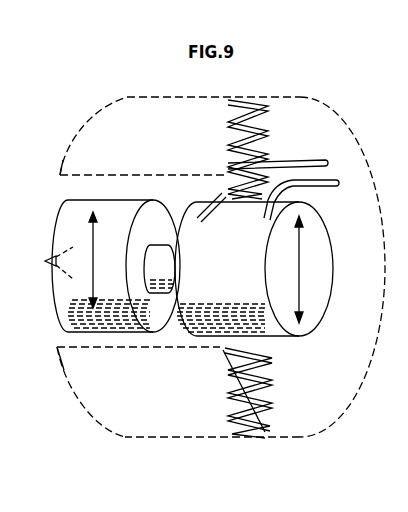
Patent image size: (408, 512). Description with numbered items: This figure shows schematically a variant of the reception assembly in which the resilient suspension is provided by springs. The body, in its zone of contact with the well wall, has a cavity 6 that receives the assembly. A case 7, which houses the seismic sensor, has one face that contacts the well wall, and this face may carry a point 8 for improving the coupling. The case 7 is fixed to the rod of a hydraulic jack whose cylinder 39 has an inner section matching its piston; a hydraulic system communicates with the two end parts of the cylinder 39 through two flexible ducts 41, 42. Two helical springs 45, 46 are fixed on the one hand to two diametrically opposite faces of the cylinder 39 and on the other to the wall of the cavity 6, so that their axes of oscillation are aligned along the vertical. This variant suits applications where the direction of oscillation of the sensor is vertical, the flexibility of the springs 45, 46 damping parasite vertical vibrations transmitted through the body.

The cavity 6 is at (105, 142).
The case 7 is at (83, 227).
The point 8 is at (49, 262).
The cylinder 39 is at (312, 285).
The flexible duct 41 is at (320, 158).
The flexible duct 42 is at (322, 187).
The helical spring 45 is at (262, 132).
The helical spring 46 is at (276, 392).